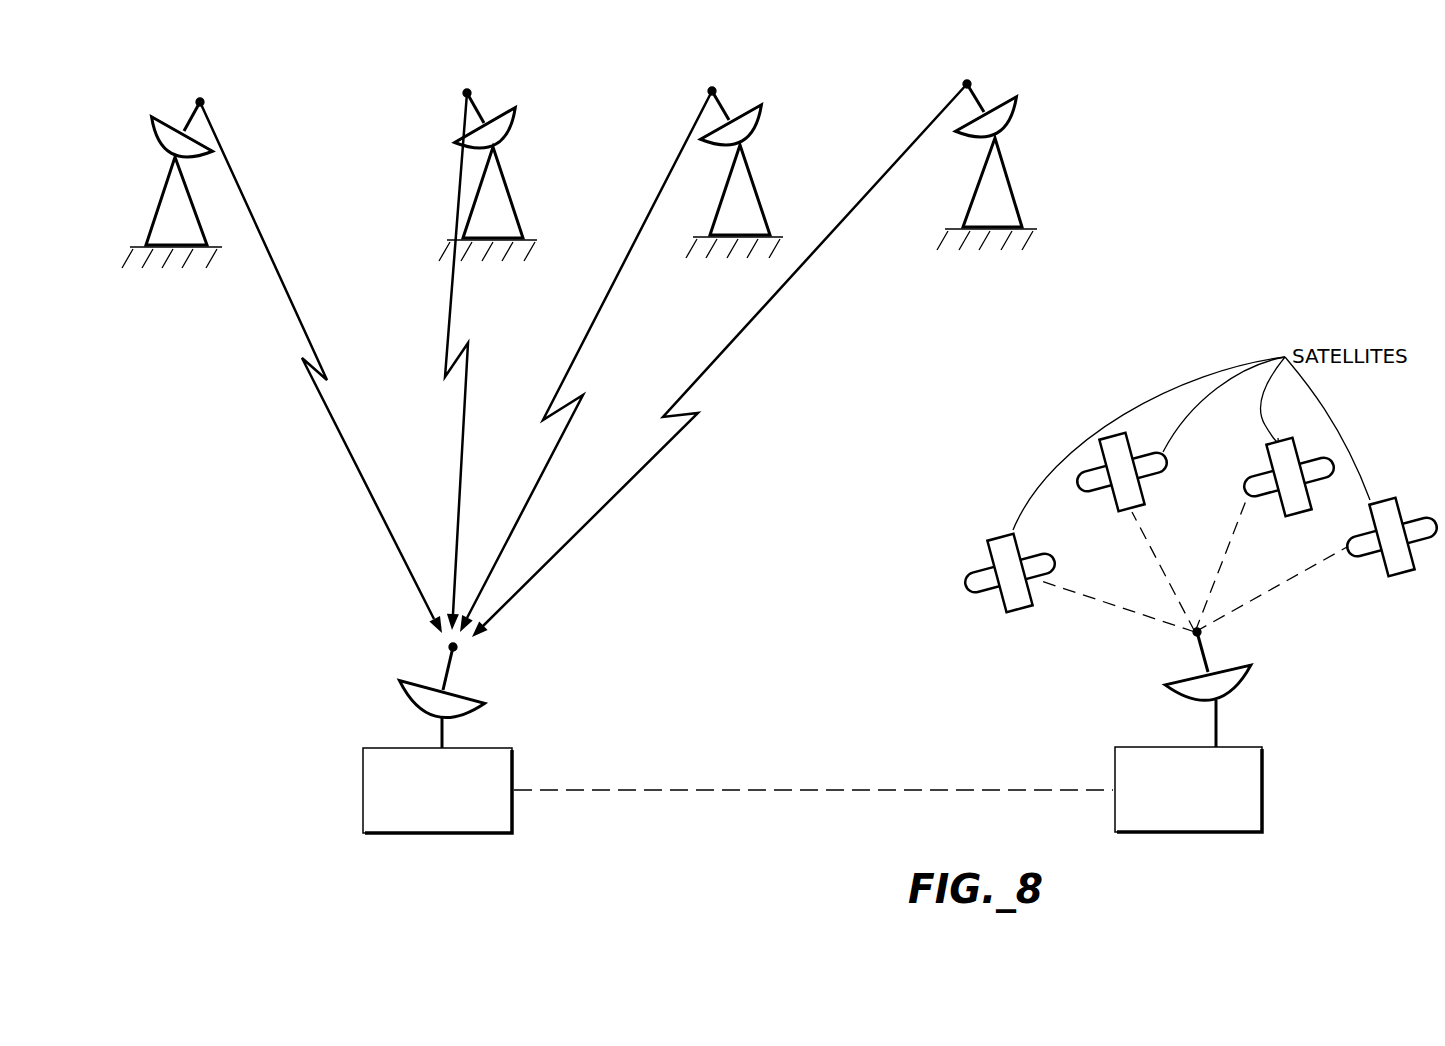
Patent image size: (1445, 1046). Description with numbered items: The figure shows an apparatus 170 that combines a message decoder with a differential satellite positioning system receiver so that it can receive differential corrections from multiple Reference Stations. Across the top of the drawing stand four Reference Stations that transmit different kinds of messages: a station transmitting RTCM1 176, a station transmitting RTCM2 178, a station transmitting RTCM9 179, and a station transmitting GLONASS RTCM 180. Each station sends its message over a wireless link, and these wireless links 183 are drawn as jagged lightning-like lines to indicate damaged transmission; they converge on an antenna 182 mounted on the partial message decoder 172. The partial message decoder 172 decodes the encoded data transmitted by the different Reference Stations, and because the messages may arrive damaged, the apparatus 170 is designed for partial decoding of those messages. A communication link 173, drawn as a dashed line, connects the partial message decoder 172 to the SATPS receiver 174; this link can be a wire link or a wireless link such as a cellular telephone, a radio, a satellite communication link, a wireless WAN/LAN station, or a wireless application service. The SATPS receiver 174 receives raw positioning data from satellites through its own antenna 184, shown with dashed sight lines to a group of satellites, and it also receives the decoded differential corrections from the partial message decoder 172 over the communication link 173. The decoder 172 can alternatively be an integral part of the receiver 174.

The apparatus 170 is at (652, 822).
The partial message decoder 172 is at (363, 776).
The communication link 173 is at (832, 791).
The differential satellite positioning system (SATPS) receiver 174 is at (1262, 775).
The Reference Station transmitting RTCM1 176 is at (188, 113).
The Reference Station transmitting RTCM2 178 is at (478, 112).
The Reference Station transmitting RTCM9 179 is at (725, 107).
The Reference Station transmitting GLONASS RTCM 180 is at (975, 97).
The decoder antenna 182 is at (444, 668).
The wireless links with damaged transmission 183 is at (547, 557).
The SATPS receiver antenna 184 is at (1203, 668).